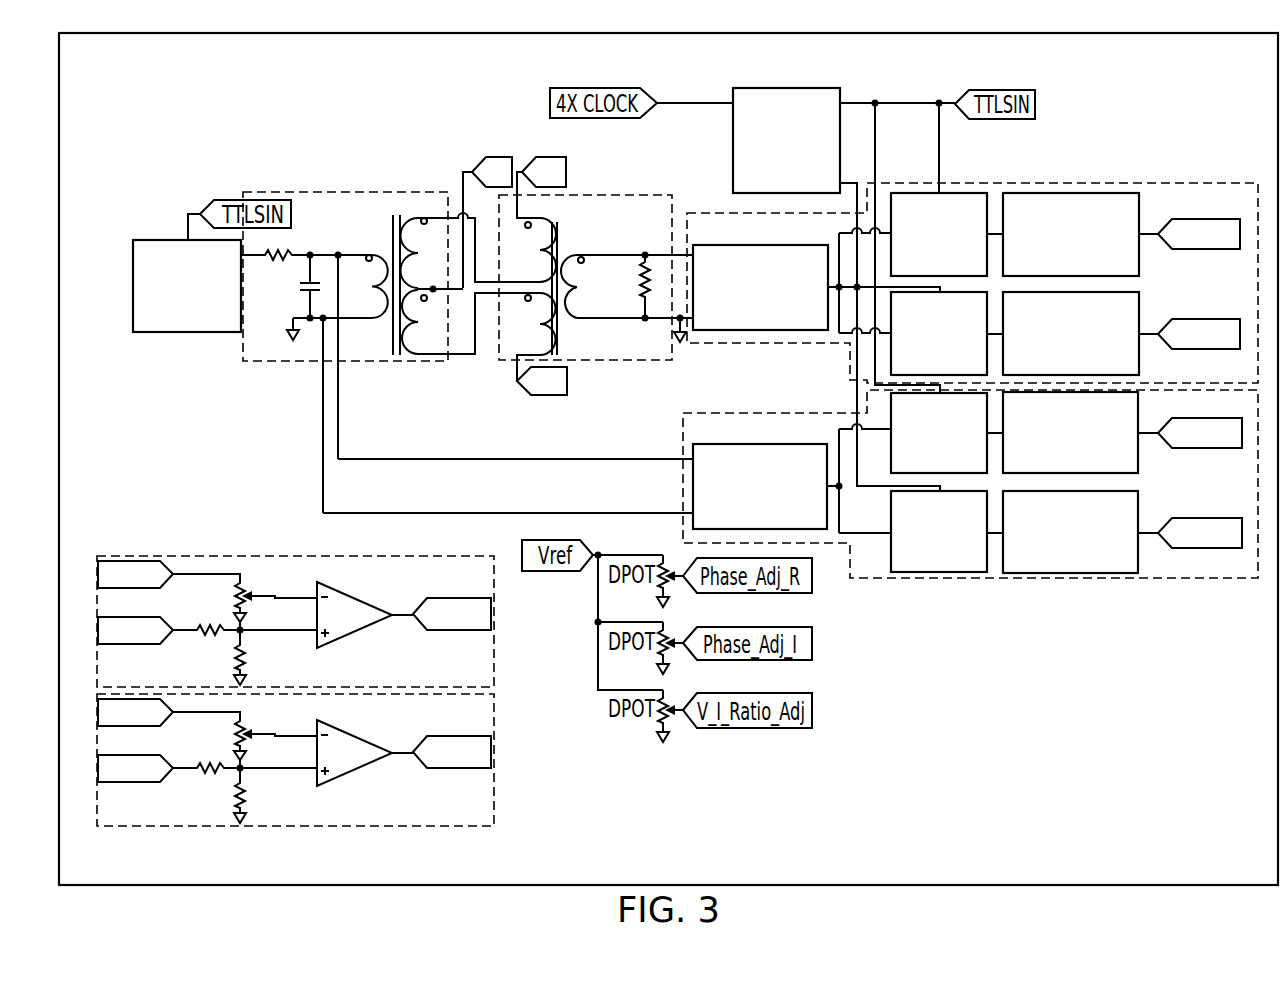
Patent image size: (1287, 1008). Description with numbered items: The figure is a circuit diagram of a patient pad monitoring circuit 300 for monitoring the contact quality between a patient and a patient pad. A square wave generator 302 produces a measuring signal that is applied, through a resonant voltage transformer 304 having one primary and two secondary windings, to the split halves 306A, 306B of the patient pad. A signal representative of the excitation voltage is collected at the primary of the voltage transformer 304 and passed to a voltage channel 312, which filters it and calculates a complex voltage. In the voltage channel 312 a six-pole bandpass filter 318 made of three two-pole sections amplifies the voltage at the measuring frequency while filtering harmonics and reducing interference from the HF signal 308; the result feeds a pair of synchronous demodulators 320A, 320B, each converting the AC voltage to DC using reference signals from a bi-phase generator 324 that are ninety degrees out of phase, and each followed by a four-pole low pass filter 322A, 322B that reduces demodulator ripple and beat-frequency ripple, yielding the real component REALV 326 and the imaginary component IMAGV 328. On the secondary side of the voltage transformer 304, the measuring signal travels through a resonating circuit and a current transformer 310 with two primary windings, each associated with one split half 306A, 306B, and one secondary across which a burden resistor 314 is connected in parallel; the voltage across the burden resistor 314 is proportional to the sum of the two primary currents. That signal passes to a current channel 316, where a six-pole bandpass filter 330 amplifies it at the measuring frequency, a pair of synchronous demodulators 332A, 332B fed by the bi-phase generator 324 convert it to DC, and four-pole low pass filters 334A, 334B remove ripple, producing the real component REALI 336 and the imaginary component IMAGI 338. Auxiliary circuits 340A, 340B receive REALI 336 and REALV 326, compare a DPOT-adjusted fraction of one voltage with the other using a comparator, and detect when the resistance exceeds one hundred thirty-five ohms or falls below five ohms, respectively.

The patient pad monitoring circuit 300 is at (126, 33).
The square wave generator 302 is at (146, 240).
The voltage transformer 304 is at (312, 192).
The split half of patient pad 306A is at (566, 172).
The split half of patient pad 306B is at (550, 395).
The HF signal 308 is at (495, 157).
The current transformer 310 is at (596, 280).
The voltage channel 312 is at (877, 578).
The burden resistor 314 is at (637, 277).
The current channel 316 is at (1098, 183).
The 6-pole bandpass filter 318 is at (760, 444).
The synchronous demodulator 320A is at (970, 462).
The synchronous demodulator 320B is at (970, 561).
The 4-pole low pass filter 322A is at (1102, 449).
The 4-pole low pass filter 322B is at (1102, 549).
The bi-phase generator 324 is at (800, 88).
The REALV output 326 is at (1218, 418).
The IMAGV output 328 is at (1218, 518).
The 6-pole bandpass filter 330 is at (760, 245).
The synchronous demodulator 332A is at (970, 263).
The synchronous demodulator 332B is at (970, 362).
The 4-pole low pass filter 334A is at (1102, 250).
The 4-pole low pass filter 334B is at (1102, 349).
The REALI output 336 is at (1216, 219).
The IMAGI output 338 is at (1216, 319).
The auxiliary circuit 340A is at (183, 556).
The auxiliary circuit 340B is at (183, 826).